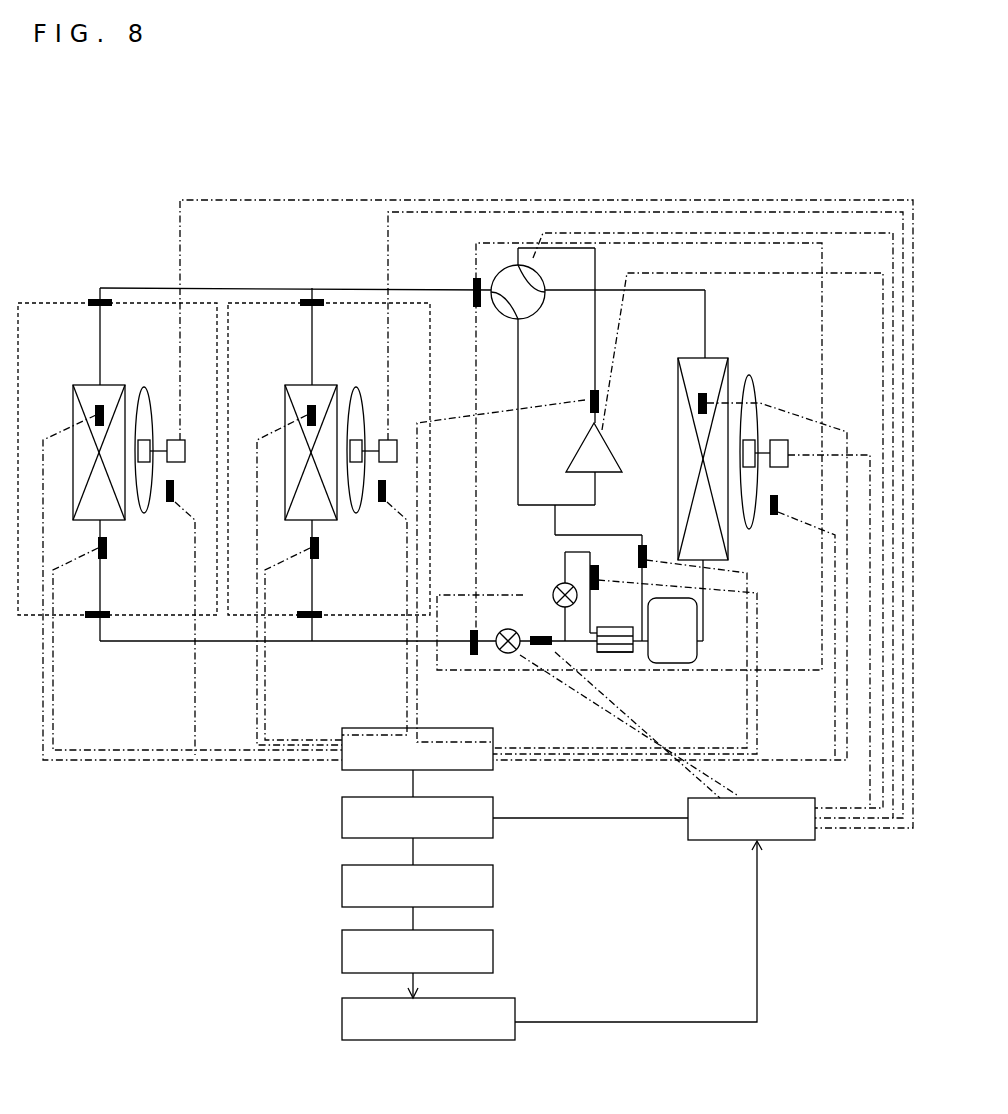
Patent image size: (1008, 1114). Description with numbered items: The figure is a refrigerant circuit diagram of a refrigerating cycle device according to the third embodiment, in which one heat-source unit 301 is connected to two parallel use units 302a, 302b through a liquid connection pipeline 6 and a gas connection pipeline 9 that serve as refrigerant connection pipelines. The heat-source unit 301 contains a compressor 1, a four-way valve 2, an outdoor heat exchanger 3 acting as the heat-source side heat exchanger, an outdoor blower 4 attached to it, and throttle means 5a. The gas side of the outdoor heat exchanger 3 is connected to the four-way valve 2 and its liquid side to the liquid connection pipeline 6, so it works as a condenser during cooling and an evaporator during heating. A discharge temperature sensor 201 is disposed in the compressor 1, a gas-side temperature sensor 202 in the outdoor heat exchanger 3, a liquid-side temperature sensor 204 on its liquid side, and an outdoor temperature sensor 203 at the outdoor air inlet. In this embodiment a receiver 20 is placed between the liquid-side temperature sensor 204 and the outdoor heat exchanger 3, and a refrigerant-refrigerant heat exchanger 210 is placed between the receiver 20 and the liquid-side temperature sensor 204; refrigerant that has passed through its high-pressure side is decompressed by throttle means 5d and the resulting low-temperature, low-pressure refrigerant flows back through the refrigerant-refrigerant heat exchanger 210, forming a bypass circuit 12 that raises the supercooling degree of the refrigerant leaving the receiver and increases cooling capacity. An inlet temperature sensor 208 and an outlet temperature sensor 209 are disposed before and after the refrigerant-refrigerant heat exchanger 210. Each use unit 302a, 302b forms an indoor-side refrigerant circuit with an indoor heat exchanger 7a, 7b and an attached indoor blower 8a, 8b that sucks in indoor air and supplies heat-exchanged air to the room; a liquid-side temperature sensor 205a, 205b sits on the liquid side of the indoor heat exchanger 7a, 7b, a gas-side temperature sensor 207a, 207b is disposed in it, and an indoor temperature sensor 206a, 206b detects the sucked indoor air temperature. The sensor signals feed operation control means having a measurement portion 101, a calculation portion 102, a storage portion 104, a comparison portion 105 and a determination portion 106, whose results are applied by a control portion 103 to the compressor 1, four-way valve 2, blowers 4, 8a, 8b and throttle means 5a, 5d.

The compressor 1 is at (608, 446).
The four-way valve 2 is at (500, 273).
The outdoor heat exchanger 3 is at (689, 438).
The outdoor blower 4 is at (789, 481).
The throttle means 5a is at (505, 604).
The throttle means 5d is at (549, 567).
The liquid connection pipeline 6 is at (462, 667).
The indoor heat exchanger 7a is at (338, 560).
The indoor heat exchanger 7b is at (127, 560).
The indoor blower 8a is at (399, 424).
The indoor blower 8b is at (187, 424).
The gas connection pipeline 9 is at (449, 276).
The bypass circuit 12 is at (615, 621).
The receiver 20 is at (681, 660).
The measurement portion 101 is at (447, 757).
The calculation portion 102 is at (447, 828).
The control portion 103 is at (771, 833).
The storage portion 104 is at (447, 895).
The comparison portion 105 is at (447, 963).
The determination portion 106 is at (447, 1032).
The discharge temperature sensor 201 is at (560, 374).
The gas-side temperature sensor 202 is at (667, 383).
The outdoor temperature sensor 203 is at (788, 532).
The liquid-side temperature sensor 204 is at (547, 671).
The liquid-side temperature sensor 205a is at (333, 610).
The liquid-side temperature sensor 205b is at (121, 610).
The indoor temperature sensor 206a is at (376, 511).
The indoor temperature sensor 206b is at (165, 511).
The gas-side temperature sensor 207a is at (294, 425).
The gas-side temperature sensor 207b is at (82, 425).
The refrigerant-refrigerant heat-exchanger inlet temperature sensor 208 is at (605, 550).
The refrigerant-refrigerant heat-exchanger outlet temperature sensor 209 is at (657, 533).
The refrigerant-refrigerant heat exchanger 210 is at (634, 687).
The heat-source unit 301 is at (629, 492).
The use unit 302a is at (329, 508).
The use unit 302b is at (117, 508).